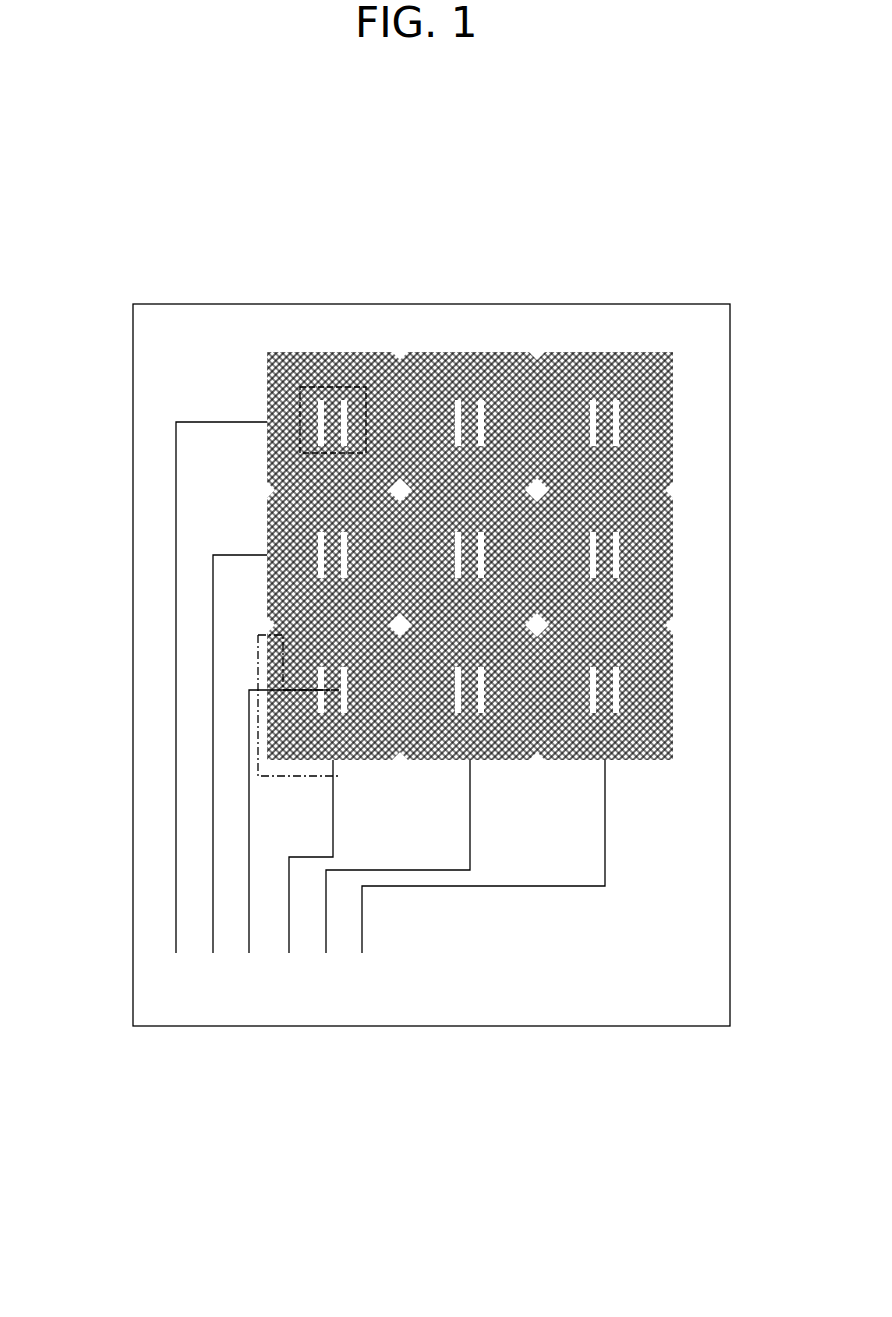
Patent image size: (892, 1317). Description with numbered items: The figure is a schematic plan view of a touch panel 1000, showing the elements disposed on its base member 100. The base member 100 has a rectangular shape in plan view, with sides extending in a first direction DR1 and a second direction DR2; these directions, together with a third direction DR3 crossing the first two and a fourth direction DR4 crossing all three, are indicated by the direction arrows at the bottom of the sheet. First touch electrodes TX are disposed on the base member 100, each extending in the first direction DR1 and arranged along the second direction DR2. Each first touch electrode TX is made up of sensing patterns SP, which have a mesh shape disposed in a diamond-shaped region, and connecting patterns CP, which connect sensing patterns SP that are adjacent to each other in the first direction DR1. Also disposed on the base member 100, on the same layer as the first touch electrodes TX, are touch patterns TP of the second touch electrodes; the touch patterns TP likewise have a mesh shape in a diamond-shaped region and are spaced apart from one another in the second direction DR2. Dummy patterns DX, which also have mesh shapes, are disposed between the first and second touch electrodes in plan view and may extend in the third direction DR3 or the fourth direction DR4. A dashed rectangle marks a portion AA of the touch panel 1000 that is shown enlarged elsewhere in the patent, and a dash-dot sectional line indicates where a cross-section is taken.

The touch panel 1000 is at (439, 691).
The base member 100 is at (683, 220).
The first touch electrodes TX is at (503, 258).
The sensing patterns SP is at (447, 350).
The connecting patterns CP is at (480, 410).
The dummy patterns DX is at (266, 358).
The touch patterns TP is at (266, 387).
The portion AA is at (341, 386).
The first direction DR1 is at (213, 1219).
The second direction DR2 is at (213, 1219).
The third direction DR3 is at (213, 1219).
The fourth direction DR4 is at (213, 1219).